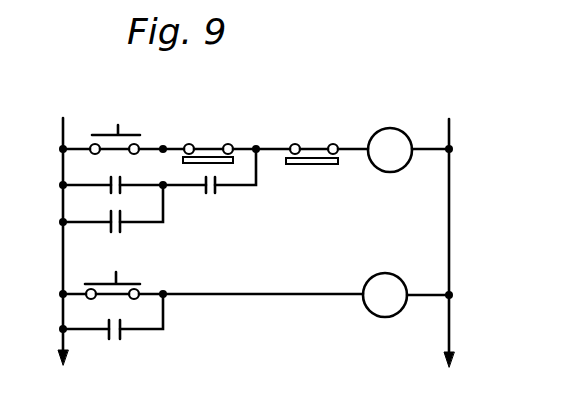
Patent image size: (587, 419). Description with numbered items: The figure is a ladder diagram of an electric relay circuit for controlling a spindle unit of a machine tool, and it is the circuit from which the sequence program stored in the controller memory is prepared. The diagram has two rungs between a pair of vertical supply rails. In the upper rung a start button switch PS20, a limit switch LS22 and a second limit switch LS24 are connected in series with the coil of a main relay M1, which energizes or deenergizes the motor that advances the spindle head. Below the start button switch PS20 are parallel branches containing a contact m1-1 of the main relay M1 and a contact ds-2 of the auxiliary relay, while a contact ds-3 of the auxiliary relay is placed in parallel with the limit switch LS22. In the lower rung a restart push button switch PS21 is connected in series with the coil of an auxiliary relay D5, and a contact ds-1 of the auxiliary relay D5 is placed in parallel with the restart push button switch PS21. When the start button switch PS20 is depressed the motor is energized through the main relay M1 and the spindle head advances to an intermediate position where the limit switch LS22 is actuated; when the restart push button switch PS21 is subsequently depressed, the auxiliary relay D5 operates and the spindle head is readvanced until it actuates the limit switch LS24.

The start button switch PS20 is at (124, 135).
The limit switch LS22 is at (212, 157).
The limit switch LS24 is at (317, 158).
The main relay M1 is at (390, 150).
The auxiliary relay D5 is at (385, 295).
The contact of the main relay m1-1 is at (136, 171).
The contact of the auxiliary relay ds-3 is at (217, 189).
The contact of the auxiliary relay ds-2 is at (122, 227).
The restart push button switch PS21 is at (128, 284).
The contact of the auxiliary relay ds-1 is at (123, 334).